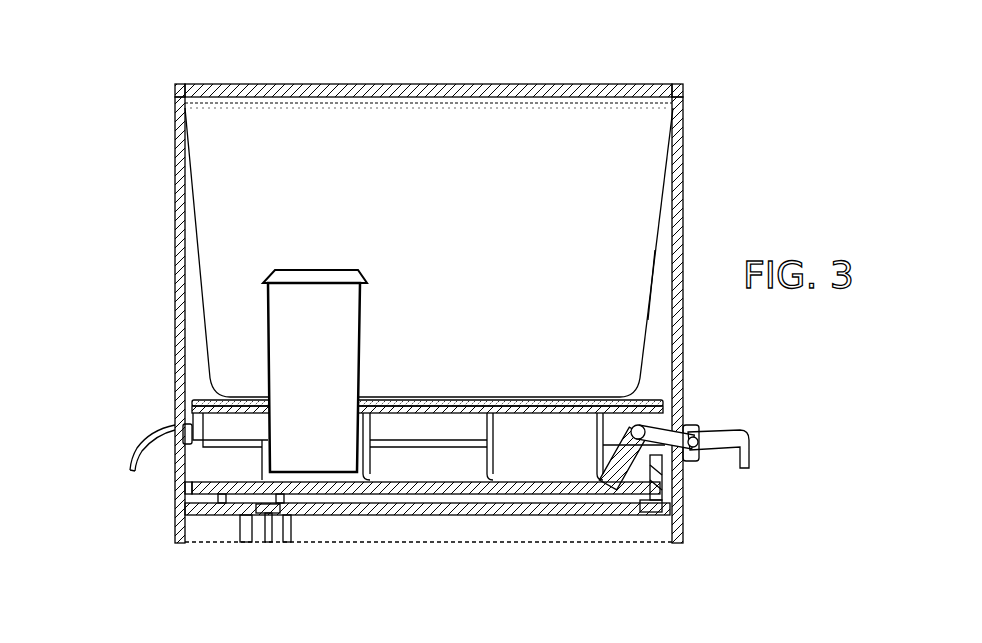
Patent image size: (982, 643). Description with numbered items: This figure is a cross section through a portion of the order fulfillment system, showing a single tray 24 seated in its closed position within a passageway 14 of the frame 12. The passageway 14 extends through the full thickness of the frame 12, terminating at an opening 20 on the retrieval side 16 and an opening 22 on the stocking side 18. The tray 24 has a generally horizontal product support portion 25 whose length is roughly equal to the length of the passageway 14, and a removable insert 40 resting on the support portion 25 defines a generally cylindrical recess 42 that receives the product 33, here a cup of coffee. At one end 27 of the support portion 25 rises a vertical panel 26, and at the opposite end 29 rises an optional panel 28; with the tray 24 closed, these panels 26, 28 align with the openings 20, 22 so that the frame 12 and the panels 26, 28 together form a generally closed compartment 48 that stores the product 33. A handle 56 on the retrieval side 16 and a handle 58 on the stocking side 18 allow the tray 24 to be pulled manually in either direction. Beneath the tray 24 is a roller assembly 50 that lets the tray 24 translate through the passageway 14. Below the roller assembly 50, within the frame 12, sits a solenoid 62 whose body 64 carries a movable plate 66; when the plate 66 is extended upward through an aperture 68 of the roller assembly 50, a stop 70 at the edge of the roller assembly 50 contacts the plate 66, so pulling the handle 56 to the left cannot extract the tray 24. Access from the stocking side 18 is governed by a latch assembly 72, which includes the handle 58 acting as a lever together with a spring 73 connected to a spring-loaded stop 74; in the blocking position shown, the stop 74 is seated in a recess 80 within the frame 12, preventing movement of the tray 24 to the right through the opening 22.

The frame 12 is at (557, 86).
The passageway 14 is at (203, 272).
The retrieval side 16 is at (175, 91).
The stocking side 18 is at (683, 90).
The opening 20 is at (172, 240).
The opening 22 is at (690, 242).
The tray 24 is at (668, 322).
The product support portion 25 is at (437, 500).
The panel 26 is at (205, 318).
The end 27 is at (188, 481).
The panel 28 is at (665, 216).
The end 29 is at (680, 478).
The product 33 is at (345, 300).
The removable insert 40 is at (492, 432).
The recess 42 is at (592, 445).
The compartment 48 is at (368, 148).
The roller assembly 50 is at (358, 496).
The handle 56 is at (137, 447).
The handle 58 is at (752, 447).
The solenoid 62 is at (277, 510).
The body 64 is at (274, 528).
The plate 66 is at (267, 505).
The aperture 68 is at (222, 495).
The stop 70 is at (280, 492).
The latch assembly 72 is at (694, 452).
The spring 73 is at (643, 478).
The stop 74 is at (652, 502).
The recess 80 is at (640, 512).